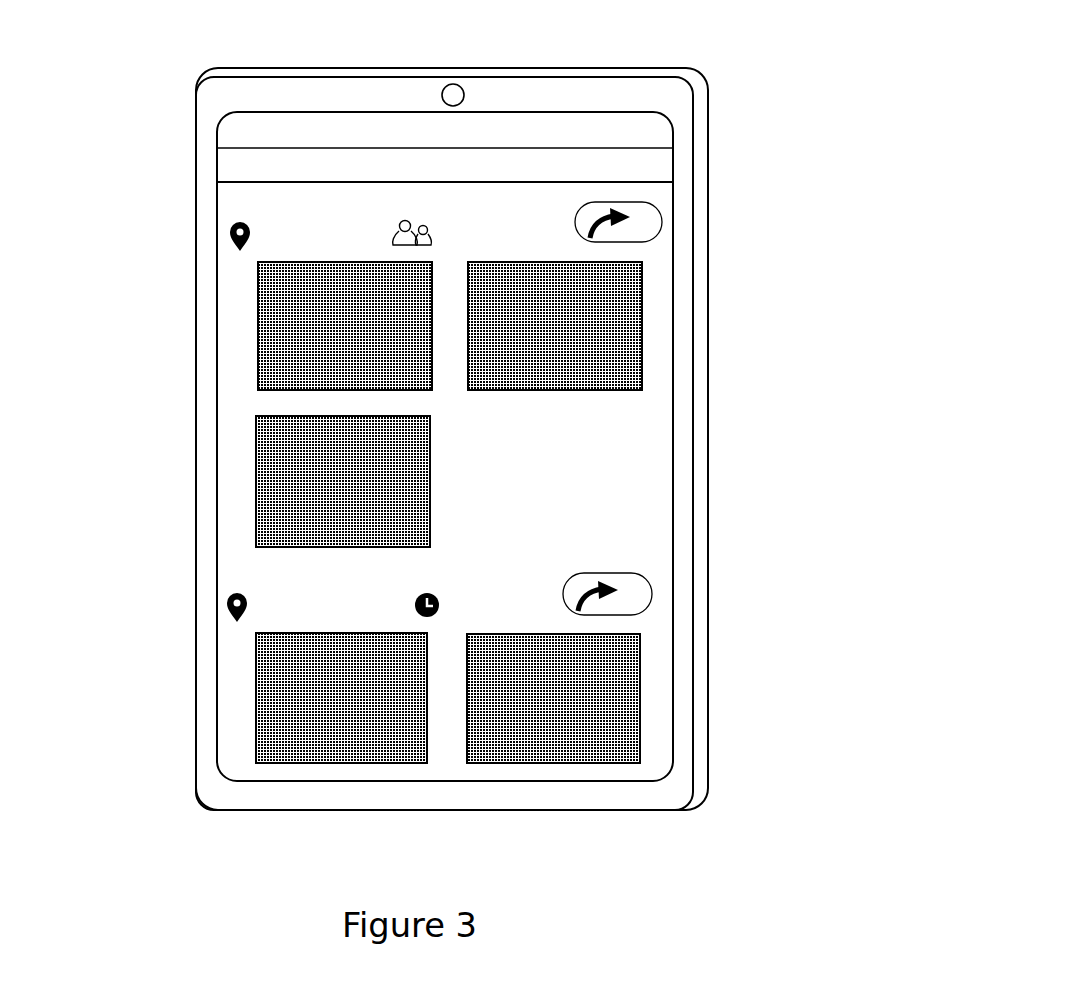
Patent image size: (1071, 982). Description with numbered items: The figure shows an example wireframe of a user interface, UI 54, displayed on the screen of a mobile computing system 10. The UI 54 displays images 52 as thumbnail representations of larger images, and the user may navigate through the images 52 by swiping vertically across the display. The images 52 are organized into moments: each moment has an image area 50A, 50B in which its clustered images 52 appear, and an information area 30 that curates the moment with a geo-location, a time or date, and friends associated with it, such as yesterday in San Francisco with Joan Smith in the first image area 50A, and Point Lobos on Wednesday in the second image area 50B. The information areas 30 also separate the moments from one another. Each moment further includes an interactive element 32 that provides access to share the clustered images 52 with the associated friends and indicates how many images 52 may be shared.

The mobile computing system 10 is at (660, 76).
The information area 30 is at (194, 195).
The interactive element 32 is at (650, 212).
The image area 50A is at (718, 543).
The image area 50B is at (718, 626).
The image 52 is at (270, 302).
The UI 54 is at (98, 148).